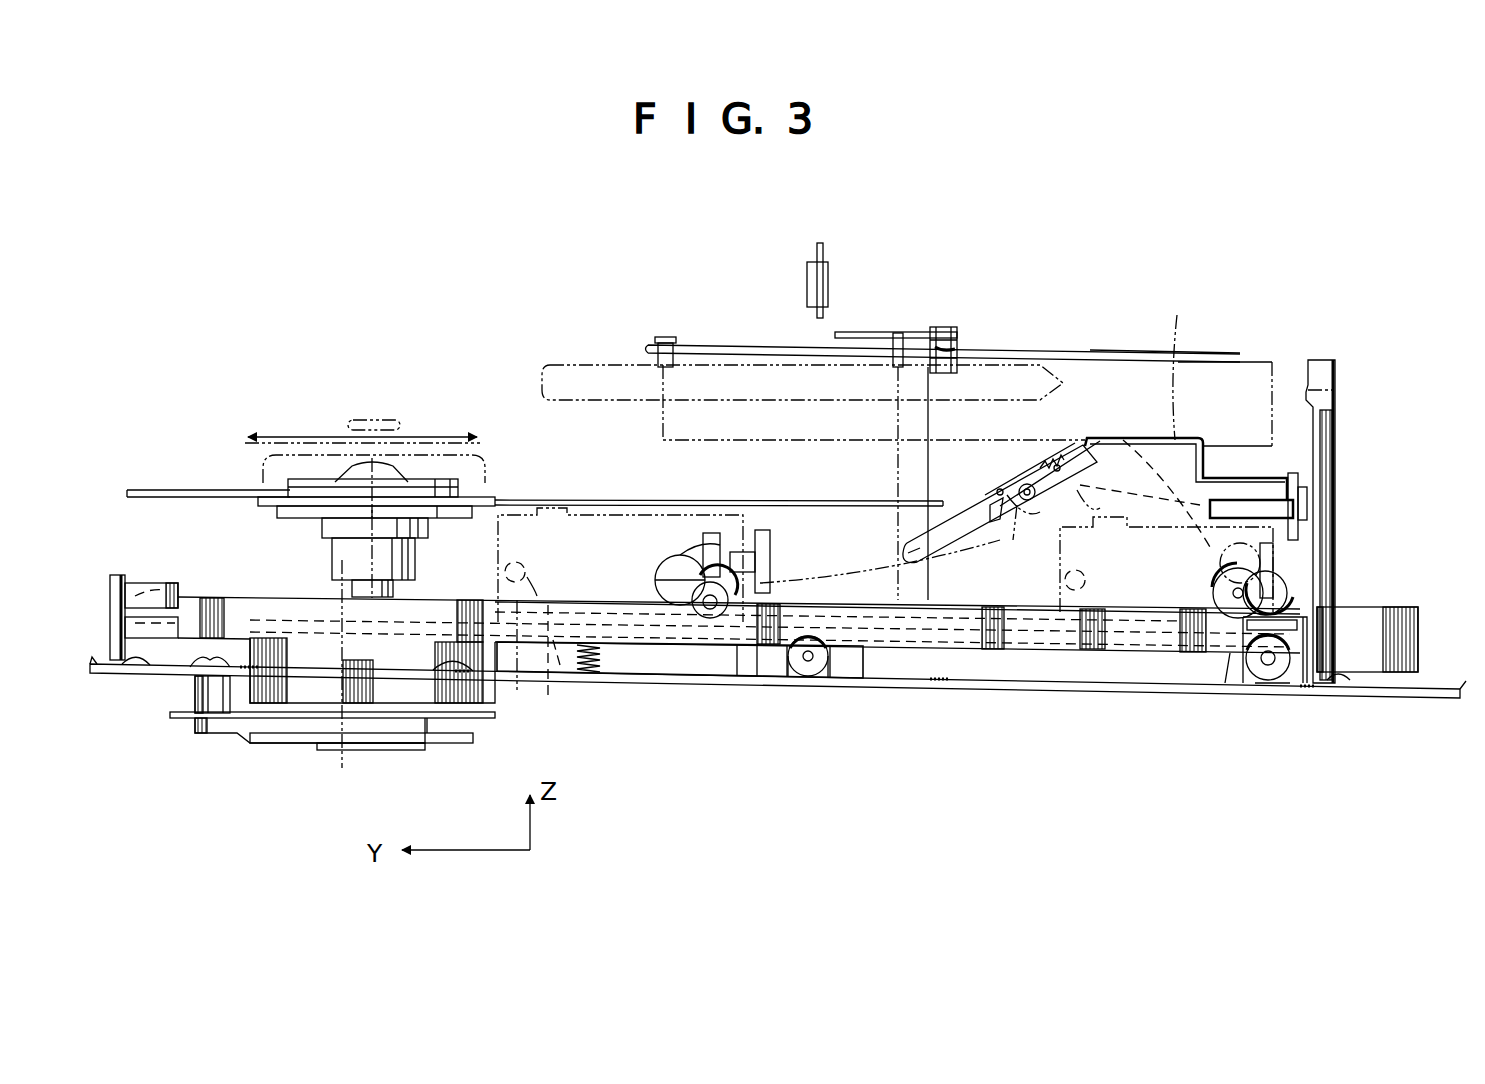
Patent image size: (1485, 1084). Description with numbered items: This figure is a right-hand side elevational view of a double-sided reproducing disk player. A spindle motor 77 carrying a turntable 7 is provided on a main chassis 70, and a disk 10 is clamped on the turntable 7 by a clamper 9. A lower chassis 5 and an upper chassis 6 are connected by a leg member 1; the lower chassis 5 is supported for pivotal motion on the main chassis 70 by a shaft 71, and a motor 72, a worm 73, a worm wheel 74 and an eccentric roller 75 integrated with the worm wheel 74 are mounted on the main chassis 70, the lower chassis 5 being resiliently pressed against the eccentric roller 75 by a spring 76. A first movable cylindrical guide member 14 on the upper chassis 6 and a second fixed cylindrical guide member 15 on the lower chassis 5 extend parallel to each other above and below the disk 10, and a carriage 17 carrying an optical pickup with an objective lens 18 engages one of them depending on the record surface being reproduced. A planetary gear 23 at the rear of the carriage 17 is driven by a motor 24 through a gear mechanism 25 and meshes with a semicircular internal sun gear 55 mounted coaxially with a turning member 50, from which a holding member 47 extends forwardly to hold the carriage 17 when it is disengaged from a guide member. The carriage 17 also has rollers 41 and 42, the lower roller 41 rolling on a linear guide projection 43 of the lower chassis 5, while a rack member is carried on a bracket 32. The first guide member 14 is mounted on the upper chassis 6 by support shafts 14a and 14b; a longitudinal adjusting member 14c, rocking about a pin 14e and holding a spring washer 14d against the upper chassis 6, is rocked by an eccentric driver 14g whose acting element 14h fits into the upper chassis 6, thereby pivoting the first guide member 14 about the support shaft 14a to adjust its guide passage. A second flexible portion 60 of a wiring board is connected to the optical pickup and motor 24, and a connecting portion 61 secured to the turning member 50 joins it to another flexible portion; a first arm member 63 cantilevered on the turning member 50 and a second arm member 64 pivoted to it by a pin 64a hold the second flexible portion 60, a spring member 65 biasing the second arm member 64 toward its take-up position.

The leg member 1 is at (900, 672).
The lower chassis 5 is at (745, 655).
The upper chassis 6 is at (1125, 352).
The turntable 7 is at (262, 520).
The clamper 9 is at (485, 465).
The disk 10 is at (215, 480).
The first movable cylindrical guide member 14 is at (617, 368).
The support shaft 14a is at (665, 345).
The support shaft 14b is at (950, 335).
The longitudinal adjusting member 14c is at (932, 335).
The spring washer 14d is at (960, 347).
The pin 14e is at (880, 342).
The eccentric driver 14g is at (830, 275).
The acting element 14h is at (808, 313).
The second fixed cylindrical guide member 15 is at (962, 612).
The carriage 17 is at (605, 508).
The objective lens 18 is at (553, 500).
The planetary gear 23 is at (778, 660).
The motor 24 is at (690, 540).
The gear mechanism 25 is at (688, 650).
The bracket 32 is at (1242, 378).
The roller 41 is at (548, 700).
The roller 42 is at (563, 668).
The linear guide projection 43 is at (517, 690).
The holding member 47 is at (1195, 677).
The turning member 50 is at (1318, 520).
The semicircular internal sun gear 55 is at (1337, 356).
The second flexible portion 60 is at (1048, 550).
The connecting portion 61 is at (1243, 500).
The first arm member 63 is at (1178, 345).
The second arm member 64 is at (1148, 448).
The pin 64a is at (1015, 520).
The spring member 65 is at (1012, 467).
The main chassis 70 is at (1140, 695).
The shaft 71 is at (808, 677).
The motor 72 is at (1408, 605).
The worm 73 is at (1245, 678).
The worm wheel 74 is at (1262, 692).
The eccentric roller 75 is at (1282, 683).
The spring 76 is at (605, 672).
The spindle motor 77 is at (342, 752).